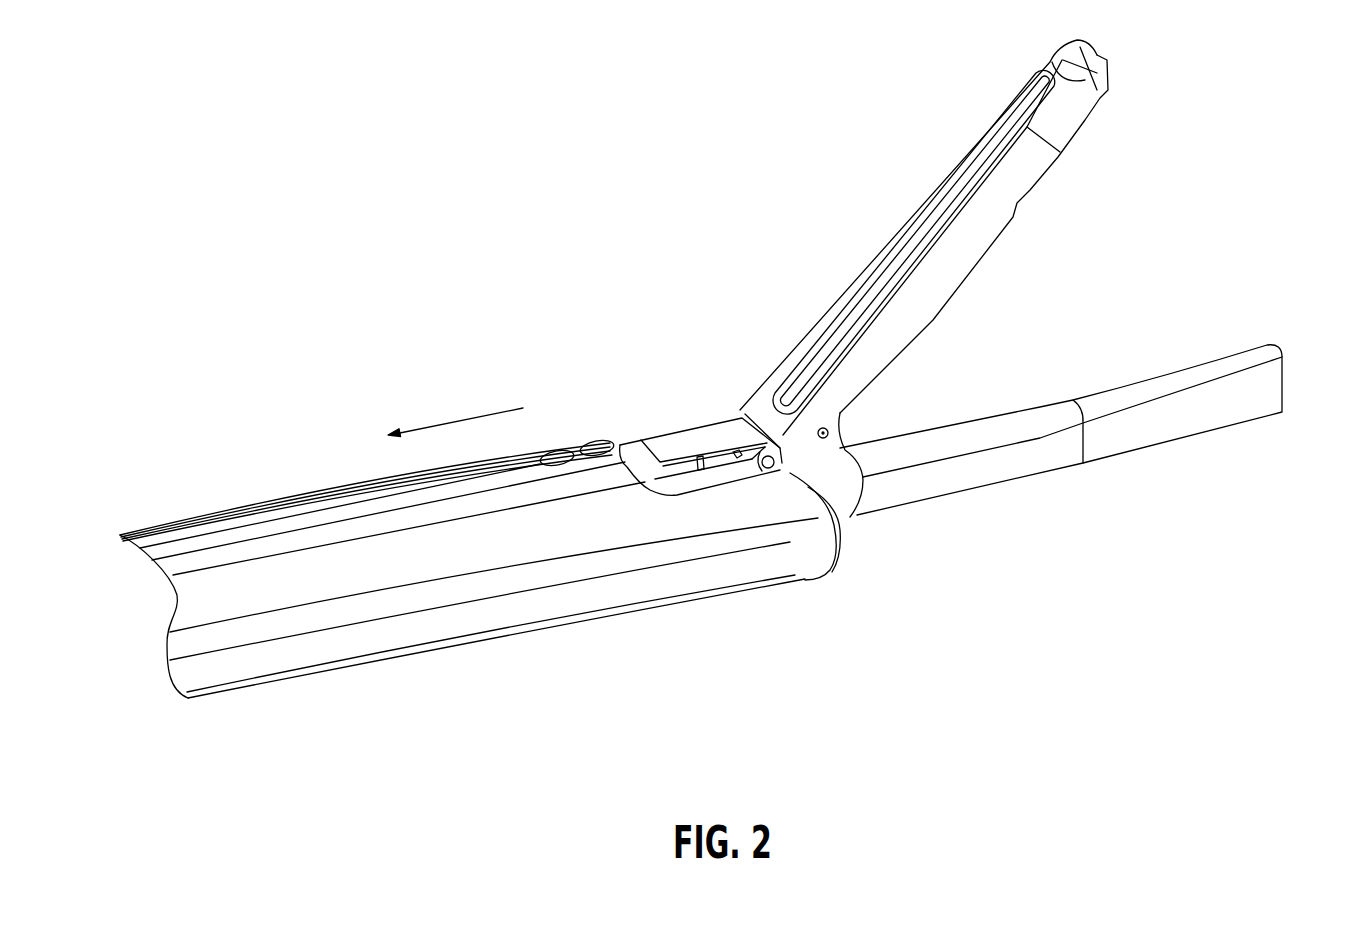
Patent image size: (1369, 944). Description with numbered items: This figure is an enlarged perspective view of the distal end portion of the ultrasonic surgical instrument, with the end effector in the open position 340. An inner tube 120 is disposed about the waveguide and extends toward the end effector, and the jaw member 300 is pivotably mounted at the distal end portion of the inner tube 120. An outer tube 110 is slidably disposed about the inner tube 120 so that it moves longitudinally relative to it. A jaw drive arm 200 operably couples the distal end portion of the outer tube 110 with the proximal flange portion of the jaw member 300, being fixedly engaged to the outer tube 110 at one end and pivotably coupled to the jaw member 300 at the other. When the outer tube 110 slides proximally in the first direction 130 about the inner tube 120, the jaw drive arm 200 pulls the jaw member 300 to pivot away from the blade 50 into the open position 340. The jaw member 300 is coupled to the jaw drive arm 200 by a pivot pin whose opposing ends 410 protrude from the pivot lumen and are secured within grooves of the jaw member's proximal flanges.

The blade 50 is at (1283, 383).
The outer tube 110 is at (512, 582).
The inner tube 120 is at (697, 480).
The first direction 130 is at (440, 422).
The jaw drive arm 200 is at (707, 433).
The jaw member 300 is at (797, 178).
The open position 340 is at (1172, 181).
The opposing ends of pivot pin 410 is at (780, 474).